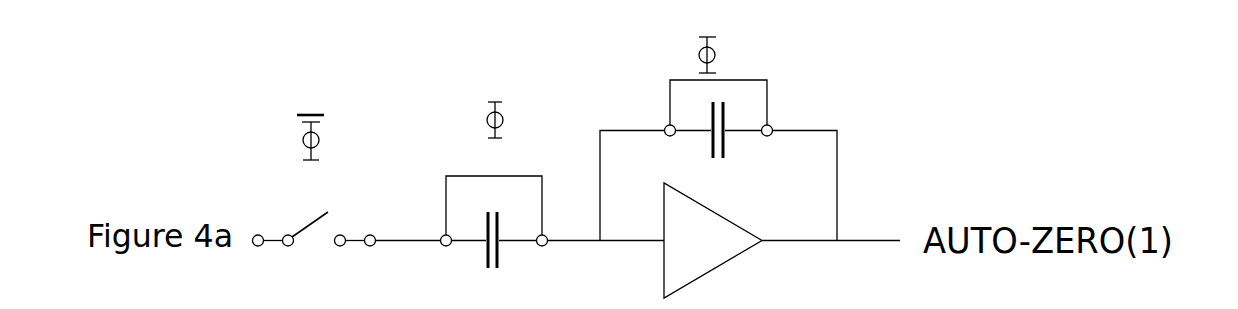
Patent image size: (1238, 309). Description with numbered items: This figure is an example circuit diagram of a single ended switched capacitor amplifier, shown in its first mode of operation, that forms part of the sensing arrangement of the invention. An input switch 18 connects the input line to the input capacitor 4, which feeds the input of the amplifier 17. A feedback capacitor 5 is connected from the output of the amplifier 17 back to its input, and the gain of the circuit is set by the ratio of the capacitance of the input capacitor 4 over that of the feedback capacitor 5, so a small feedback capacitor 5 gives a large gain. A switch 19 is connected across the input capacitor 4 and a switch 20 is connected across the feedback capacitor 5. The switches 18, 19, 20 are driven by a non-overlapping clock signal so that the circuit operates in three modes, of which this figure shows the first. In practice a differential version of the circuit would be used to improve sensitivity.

The input capacitor 4 is at (480, 264).
The feedback capacitor 5 is at (725, 159).
The amplifier 17 is at (733, 268).
The switch 18 is at (318, 208).
The switch 19 is at (485, 168).
The switch 20 is at (730, 70).